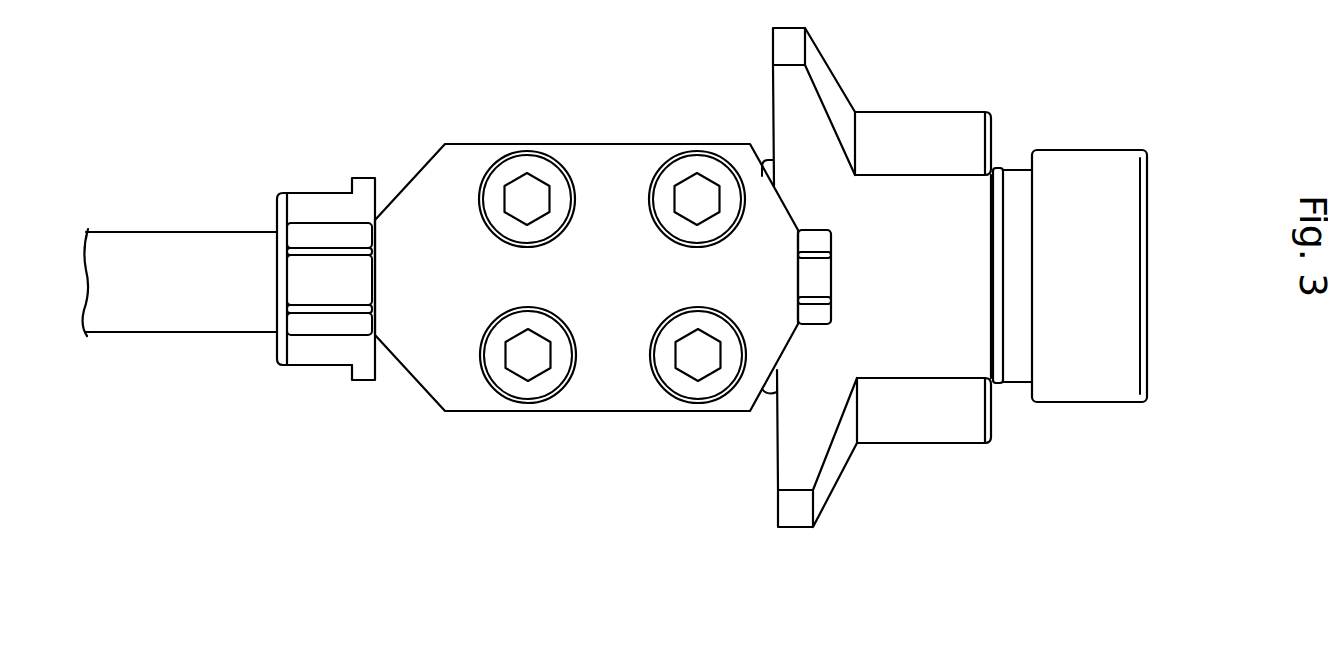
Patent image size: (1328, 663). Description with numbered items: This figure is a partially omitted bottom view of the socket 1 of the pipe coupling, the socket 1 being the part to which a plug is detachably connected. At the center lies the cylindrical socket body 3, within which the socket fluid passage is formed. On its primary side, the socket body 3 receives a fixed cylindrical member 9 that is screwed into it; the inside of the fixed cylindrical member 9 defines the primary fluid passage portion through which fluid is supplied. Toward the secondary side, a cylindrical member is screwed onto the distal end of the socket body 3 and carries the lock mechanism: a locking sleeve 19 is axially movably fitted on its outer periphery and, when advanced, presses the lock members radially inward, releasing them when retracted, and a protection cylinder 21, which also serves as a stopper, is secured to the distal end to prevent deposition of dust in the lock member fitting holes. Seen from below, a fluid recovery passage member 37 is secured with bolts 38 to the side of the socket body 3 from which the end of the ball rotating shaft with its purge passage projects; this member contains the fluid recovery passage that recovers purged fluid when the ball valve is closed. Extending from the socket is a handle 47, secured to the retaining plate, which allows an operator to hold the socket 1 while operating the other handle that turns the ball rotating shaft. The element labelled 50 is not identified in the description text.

The socket 1 is at (728, 130).
The socket body 3 is at (388, 180).
The fixed cylindrical member 9 is at (312, 203).
The locking sleeve 19 is at (1015, 177).
The protection cylinder 21 is at (1083, 167).
The fluid recovery passage member 37 is at (593, 157).
The bolts 38 is at (512, 167).
The handle 47 is at (167, 252).
The mounting flange plate 50 is at (820, 77).